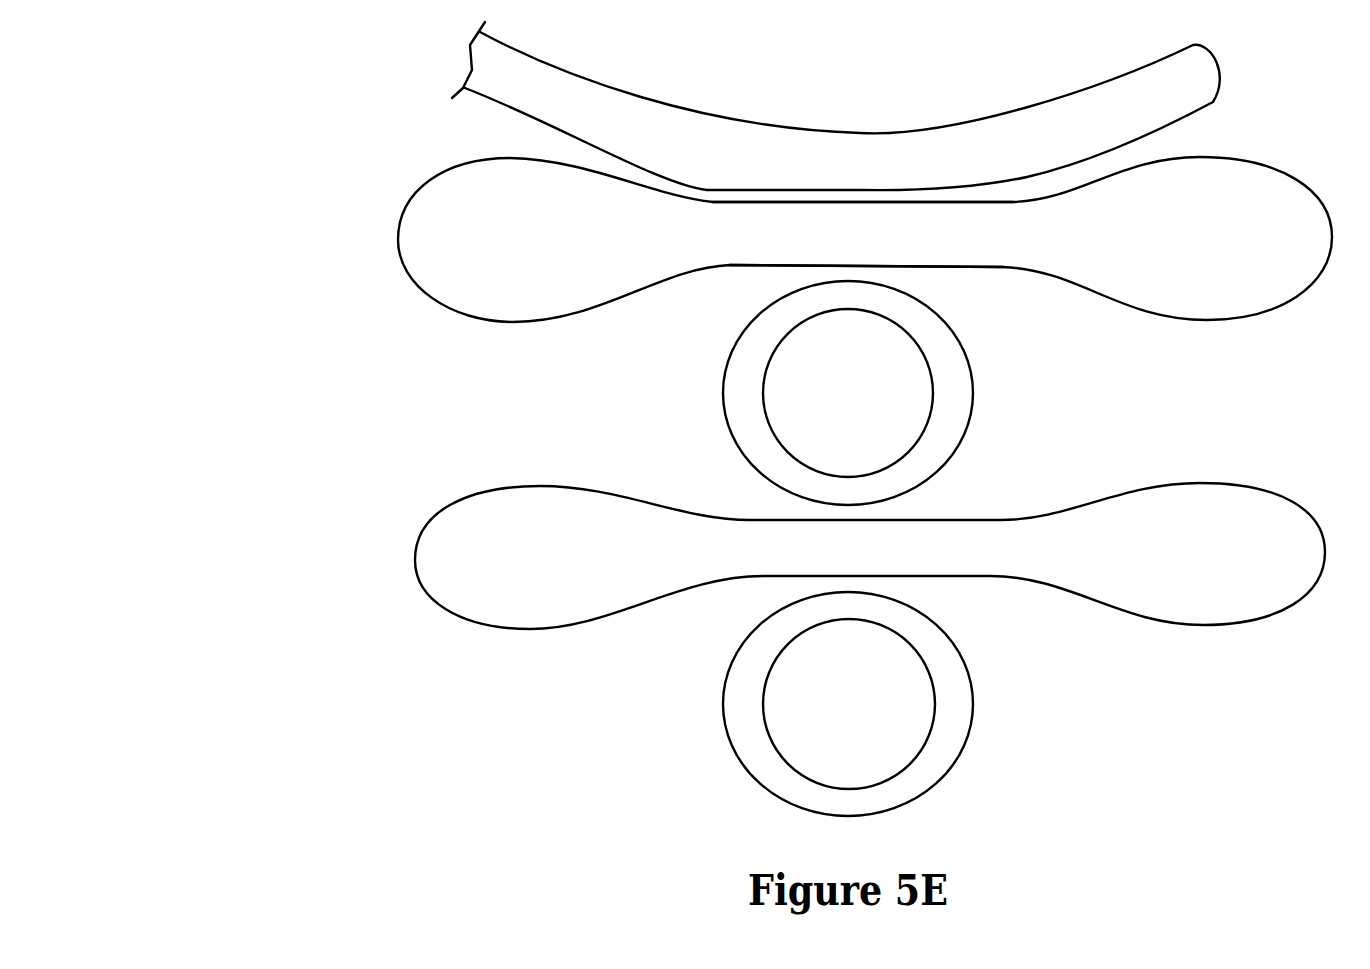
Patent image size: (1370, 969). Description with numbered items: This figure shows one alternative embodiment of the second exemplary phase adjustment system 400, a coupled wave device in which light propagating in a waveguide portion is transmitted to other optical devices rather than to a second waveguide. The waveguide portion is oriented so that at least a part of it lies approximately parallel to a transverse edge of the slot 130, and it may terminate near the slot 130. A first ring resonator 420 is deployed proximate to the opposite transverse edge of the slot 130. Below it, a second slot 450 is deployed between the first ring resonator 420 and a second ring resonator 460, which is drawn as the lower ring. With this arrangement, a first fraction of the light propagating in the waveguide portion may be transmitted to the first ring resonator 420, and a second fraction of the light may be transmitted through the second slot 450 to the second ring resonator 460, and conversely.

The second exemplary phase adjustment system 400 is at (195, 381).
The slot 130 is at (398, 260).
The first ring resonator 420 is at (730, 400).
The second slot 450 is at (413, 563).
The second cylindrical rod 460 is at (725, 733).